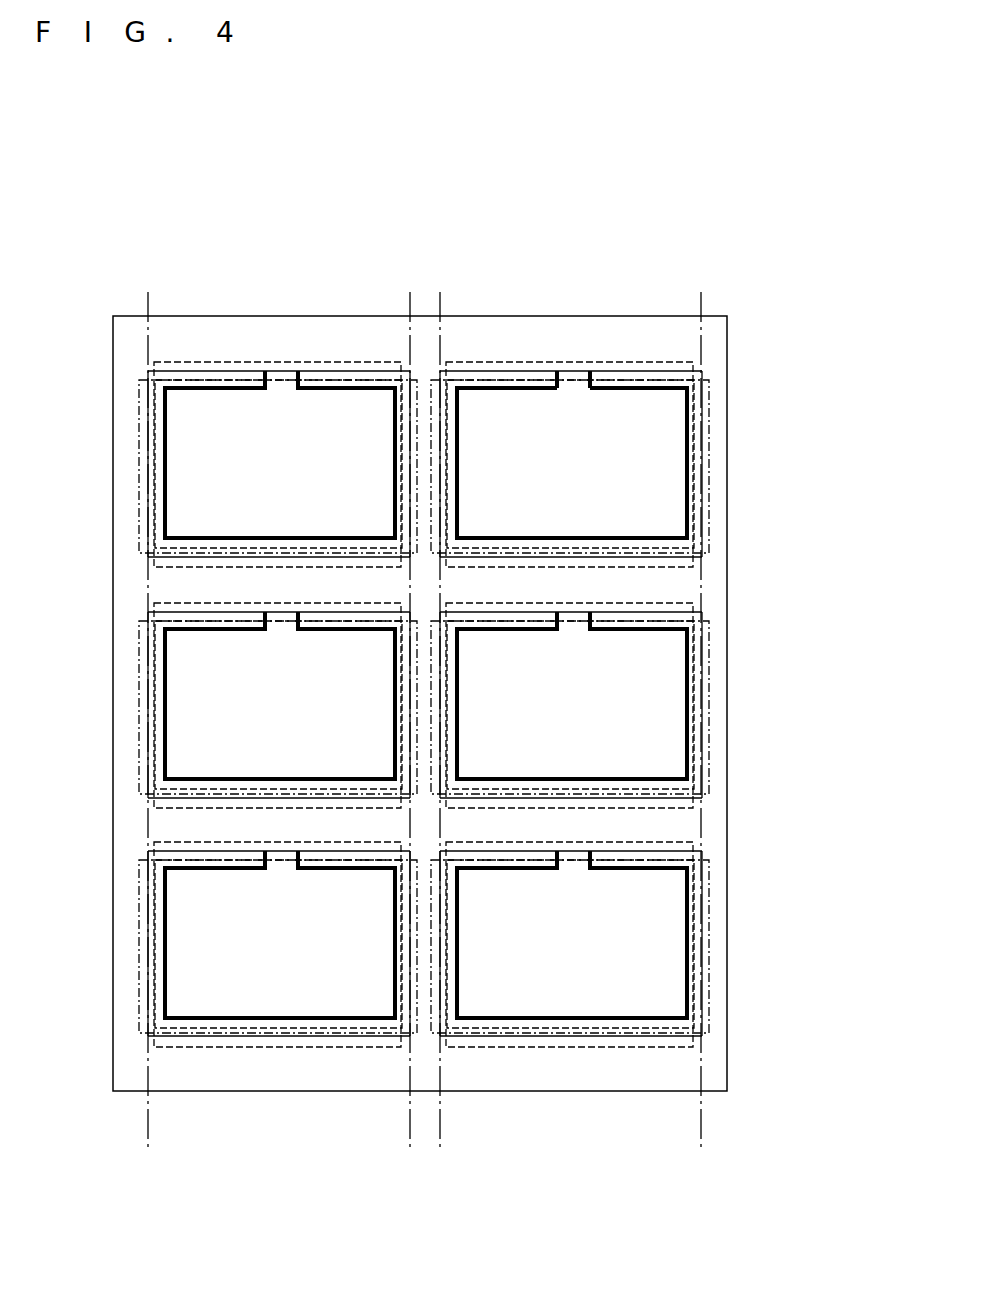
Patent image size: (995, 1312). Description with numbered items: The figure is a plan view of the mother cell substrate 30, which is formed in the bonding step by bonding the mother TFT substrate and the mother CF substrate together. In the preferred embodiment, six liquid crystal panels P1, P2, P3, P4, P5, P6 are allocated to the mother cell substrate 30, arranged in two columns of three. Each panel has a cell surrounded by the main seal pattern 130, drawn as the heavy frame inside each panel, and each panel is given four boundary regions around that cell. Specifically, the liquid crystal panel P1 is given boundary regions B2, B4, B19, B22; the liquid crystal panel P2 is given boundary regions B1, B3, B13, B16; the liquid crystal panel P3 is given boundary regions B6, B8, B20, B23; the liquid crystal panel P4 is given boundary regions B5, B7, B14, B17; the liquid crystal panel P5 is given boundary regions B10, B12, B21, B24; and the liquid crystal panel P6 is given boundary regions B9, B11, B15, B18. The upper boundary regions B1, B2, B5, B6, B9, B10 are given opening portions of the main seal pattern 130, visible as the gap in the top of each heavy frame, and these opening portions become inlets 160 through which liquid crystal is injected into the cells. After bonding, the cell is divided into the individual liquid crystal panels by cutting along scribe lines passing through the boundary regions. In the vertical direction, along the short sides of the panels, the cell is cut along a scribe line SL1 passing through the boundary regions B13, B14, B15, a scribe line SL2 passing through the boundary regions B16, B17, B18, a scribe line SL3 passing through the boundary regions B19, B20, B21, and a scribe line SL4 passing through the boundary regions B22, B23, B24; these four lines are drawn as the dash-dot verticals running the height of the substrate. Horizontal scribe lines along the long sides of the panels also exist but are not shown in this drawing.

The mother cell substrate 30 is at (490, 293).
The main seal pattern 130 is at (693, 412).
The inlet 160 is at (577, 381).
The scribe line SL1 is at (150, 735).
The scribe line SL2 is at (400, 735).
The scribe line SL3 is at (452, 736).
The scribe line SL4 is at (698, 736).
The liquid crystal panel P1 is at (616, 411).
The liquid crystal panel P2 is at (278, 464).
The liquid crystal panel P3 is at (570, 705).
The liquid crystal panel P4 is at (278, 705).
The liquid crystal panel P5 is at (570, 944).
The liquid crystal panel P6 is at (278, 944).
The boundary region B1 is at (320, 371).
The boundary region B2 is at (537, 372).
The boundary region B3 is at (320, 557).
The boundary region B4 is at (615, 557).
The boundary region B5 is at (320, 612).
The boundary region B6 is at (612, 612).
The boundary region B7 is at (320, 798).
The boundary region B8 is at (606, 798).
The boundary region B9 is at (320, 851).
The boundary region B10 is at (614, 851).
The boundary region B11 is at (320, 1036).
The boundary region B12 is at (612, 1036).
The boundary region B13 is at (148, 449).
The boundary region B14 is at (148, 701).
The boundary region B15 is at (148, 941).
The boundary region B16 is at (410, 449).
The boundary region B17 is at (410, 700).
The boundary region B18 is at (410, 940).
The boundary region B19 is at (440, 461).
The boundary region B20 is at (440, 702).
The boundary region B21 is at (440, 942).
The boundary region B22 is at (702, 461).
The boundary region B23 is at (702, 702).
The boundary region B24 is at (702, 942).